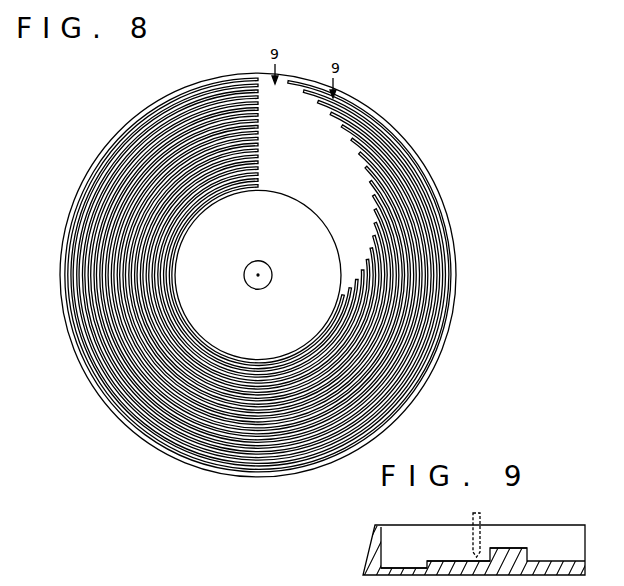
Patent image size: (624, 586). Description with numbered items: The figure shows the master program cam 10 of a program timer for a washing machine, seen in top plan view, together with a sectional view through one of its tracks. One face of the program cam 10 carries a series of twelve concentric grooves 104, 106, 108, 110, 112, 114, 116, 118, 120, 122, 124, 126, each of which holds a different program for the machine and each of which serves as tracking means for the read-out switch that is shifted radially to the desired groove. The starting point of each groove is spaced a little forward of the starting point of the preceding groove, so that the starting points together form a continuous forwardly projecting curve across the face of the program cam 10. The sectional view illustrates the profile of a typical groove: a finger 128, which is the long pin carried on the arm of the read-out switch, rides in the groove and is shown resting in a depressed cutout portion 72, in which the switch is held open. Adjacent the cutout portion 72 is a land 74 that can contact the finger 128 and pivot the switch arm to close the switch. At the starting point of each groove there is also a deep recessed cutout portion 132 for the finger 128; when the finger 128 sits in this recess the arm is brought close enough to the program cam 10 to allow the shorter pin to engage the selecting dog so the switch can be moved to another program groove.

In FIG. 8, the program cam 10 is at (441, 196).
In FIG. 8, the concentric groove 104 is at (289, 84).
In FIG. 8, the concentric groove 106 is at (318, 101).
In FIG. 8, the concentric groove 108 is at (342, 125).
In FIG. 8, the concentric groove 110 is at (360, 152).
In FIG. 8, the concentric groove 112 is at (367, 166).
In FIG. 8, the concentric groove 114 is at (375, 195).
In FIG. 8, the concentric groove 116 is at (376, 209).
In FIG. 8, the concentric groove 118 is at (375, 235).
In FIG. 8, the concentric groove 120 is at (372, 248).
In FIG. 8, the concentric groove 122 is at (364, 270).
In FIG. 8, the concentric groove 124 is at (358, 279).
In FIG. 8, the concentric groove 126 is at (344, 295).
In FIG. 9, the finger 128 is at (484, 514).
In FIG. 9, the recessed cutout portion 132 is at (413, 562).
In FIG. 9, the cutout portion 72 is at (450, 560).
In FIG. 9, the land 74 is at (503, 548).